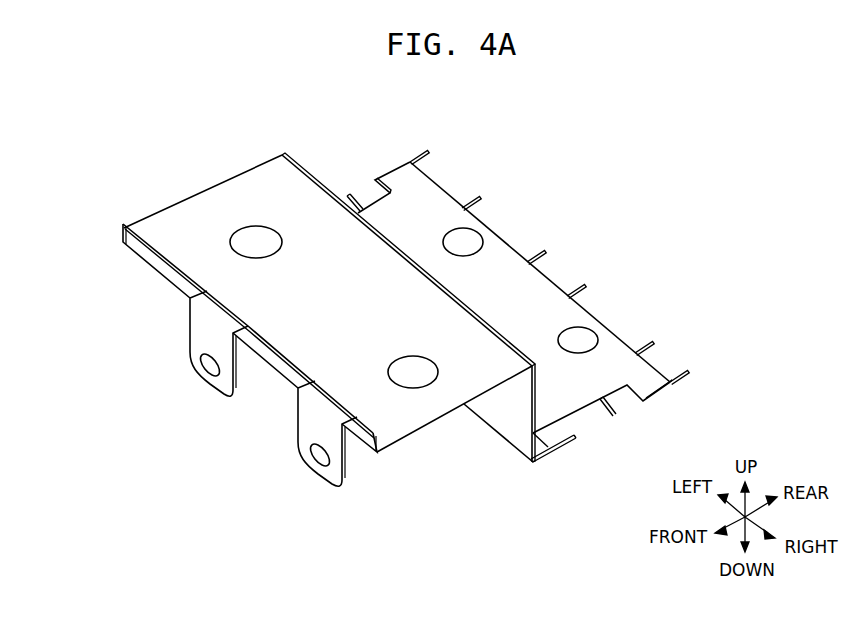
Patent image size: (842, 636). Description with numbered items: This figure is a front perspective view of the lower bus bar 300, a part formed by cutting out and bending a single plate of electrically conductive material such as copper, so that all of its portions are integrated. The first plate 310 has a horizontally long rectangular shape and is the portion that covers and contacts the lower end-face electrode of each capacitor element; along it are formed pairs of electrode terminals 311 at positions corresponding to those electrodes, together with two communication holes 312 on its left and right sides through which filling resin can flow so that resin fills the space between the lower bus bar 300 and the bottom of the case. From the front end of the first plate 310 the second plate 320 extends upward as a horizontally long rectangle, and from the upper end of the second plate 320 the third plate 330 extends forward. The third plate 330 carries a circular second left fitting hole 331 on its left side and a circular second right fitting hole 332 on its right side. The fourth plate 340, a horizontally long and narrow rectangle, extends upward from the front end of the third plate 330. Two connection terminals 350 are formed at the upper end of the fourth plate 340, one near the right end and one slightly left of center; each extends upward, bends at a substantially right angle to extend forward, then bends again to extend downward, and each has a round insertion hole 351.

The lower bus bar 300 is at (283, 150).
The first plate 310 is at (401, 175).
The electrode terminals 311 is at (353, 195).
The communication holes 312 is at (470, 241).
The second plate 320 is at (490, 409).
The third plate 330 is at (185, 224).
The second left fitting hole 331 is at (256, 238).
The second right fitting hole 332 is at (410, 366).
The fourth plate 340 is at (364, 443).
The connection terminals 350 is at (206, 383).
The insertion hole 351 is at (203, 361).